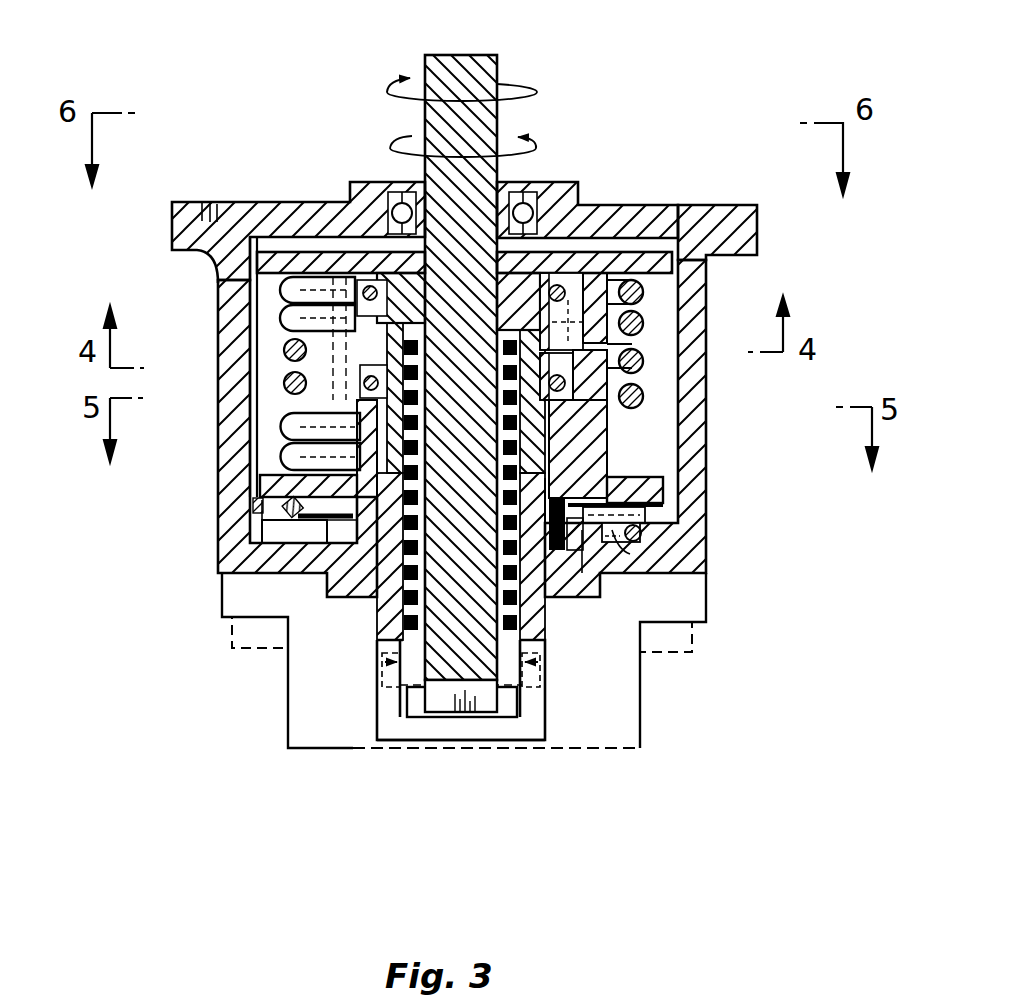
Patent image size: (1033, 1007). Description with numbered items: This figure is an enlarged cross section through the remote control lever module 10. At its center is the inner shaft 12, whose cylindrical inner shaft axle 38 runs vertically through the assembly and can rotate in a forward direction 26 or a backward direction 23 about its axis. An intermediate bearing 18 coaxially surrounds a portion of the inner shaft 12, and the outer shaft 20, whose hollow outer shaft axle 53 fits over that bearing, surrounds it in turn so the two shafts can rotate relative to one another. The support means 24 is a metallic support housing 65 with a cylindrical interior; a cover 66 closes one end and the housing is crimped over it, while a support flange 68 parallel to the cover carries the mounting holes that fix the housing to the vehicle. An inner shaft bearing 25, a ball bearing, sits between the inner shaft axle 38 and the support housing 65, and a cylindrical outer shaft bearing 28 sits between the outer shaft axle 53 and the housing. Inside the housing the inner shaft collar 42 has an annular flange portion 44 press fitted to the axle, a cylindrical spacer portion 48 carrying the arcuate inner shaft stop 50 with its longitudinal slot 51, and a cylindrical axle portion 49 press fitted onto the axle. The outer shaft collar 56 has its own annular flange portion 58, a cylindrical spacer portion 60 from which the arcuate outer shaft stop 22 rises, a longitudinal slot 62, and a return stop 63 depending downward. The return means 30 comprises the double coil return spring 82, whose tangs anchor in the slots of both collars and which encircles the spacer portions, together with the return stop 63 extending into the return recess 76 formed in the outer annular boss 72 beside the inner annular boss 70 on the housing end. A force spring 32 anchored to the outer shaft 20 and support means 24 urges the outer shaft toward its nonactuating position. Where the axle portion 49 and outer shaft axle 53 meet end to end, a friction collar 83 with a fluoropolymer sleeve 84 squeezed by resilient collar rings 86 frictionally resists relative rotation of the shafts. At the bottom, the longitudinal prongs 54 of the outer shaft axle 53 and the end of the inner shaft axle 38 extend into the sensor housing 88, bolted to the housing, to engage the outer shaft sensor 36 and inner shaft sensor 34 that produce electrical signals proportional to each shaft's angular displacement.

The remote control lever module 10 is at (722, 46).
The inner shaft 12 is at (507, 66).
The intermediate bearing 18 is at (508, 655).
The outer shaft 20 is at (556, 655).
The outer shaft stop 22 is at (646, 400).
The backward rotation 23 is at (530, 80).
The support means 24 is at (650, 190).
The inner shaft bearing 25 is at (400, 298).
The forward rotation 26 is at (522, 137).
The outer shaft bearing 28 is at (268, 574).
The return means 30 is at (268, 456).
The force spring 32 is at (655, 537).
The inner shaft sensor 34 is at (487, 722).
The outer shaft sensor 36 is at (385, 660).
The inner shaft axle 38 is at (490, 106).
The inner shaft collar 42 is at (620, 284).
The annular flange portion 44 is at (240, 255).
The cylindrical spacer portion 48 is at (598, 344).
The cylindrical axle portion 49 is at (391, 208).
The inner shaft stop 50 is at (285, 350).
The longitudinal slot 51 is at (284, 385).
The outer shaft axle 53 is at (393, 610).
The longitudinal prongs 54 is at (390, 665).
The outer shaft collar 56 is at (612, 430).
The annular flange portion 58 is at (663, 484).
The cylindrical spacer portion 60 is at (607, 458).
The longitudinal slot 62 is at (295, 404).
The return stop 63 is at (660, 517).
The support housing 65 is at (246, 507).
The cover 66 is at (583, 192).
The support flange 68 is at (757, 234).
The inner annular boss 70 is at (582, 531).
The outer annular boss 72 is at (270, 513).
The return recess 76 is at (612, 531).
The return spring 82 is at (272, 450).
The friction collar 83 is at (644, 326).
The sleeve 84 is at (645, 366).
The collar rings 86 is at (644, 298).
The sensor housing 88 is at (424, 750).